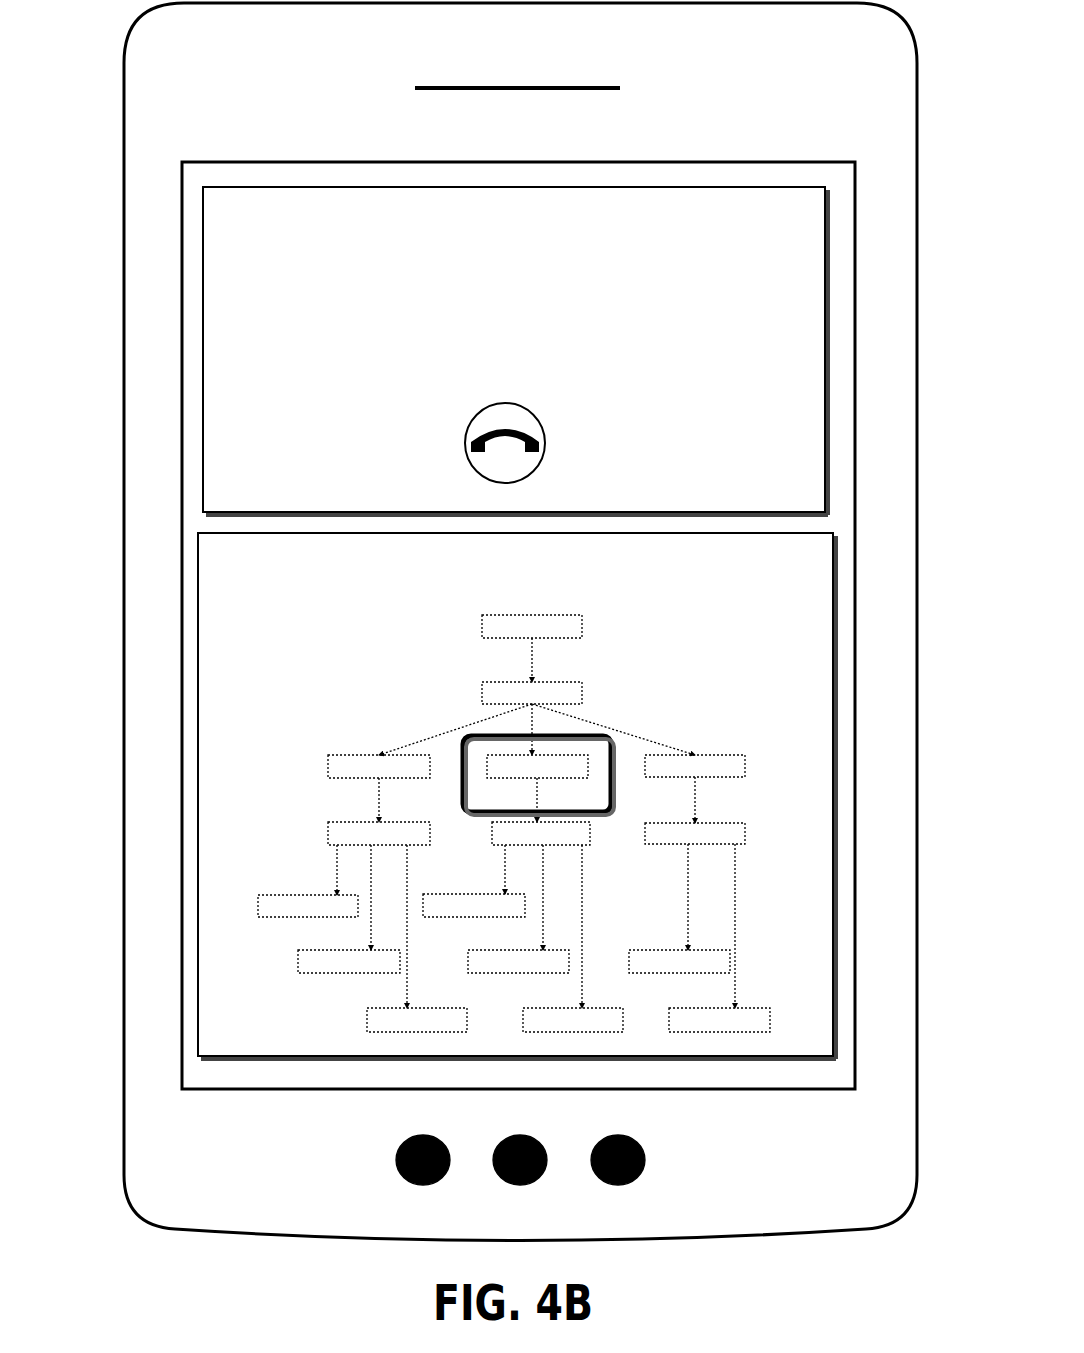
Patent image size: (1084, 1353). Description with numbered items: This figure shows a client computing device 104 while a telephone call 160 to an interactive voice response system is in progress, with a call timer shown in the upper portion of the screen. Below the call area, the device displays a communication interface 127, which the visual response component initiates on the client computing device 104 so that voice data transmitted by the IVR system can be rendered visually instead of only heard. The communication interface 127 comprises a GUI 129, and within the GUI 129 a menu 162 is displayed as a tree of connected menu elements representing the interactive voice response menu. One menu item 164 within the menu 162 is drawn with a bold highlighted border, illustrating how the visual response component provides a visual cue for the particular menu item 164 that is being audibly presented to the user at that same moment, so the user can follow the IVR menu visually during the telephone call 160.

The client computing device 104 is at (520, 622).
The communication interface 127 is at (792, 670).
The telephone call 160 is at (515, 351).
The GUI 129 is at (439, 796).
The menu 162 is at (253, 912).
The menu item 164 is at (518, 803).